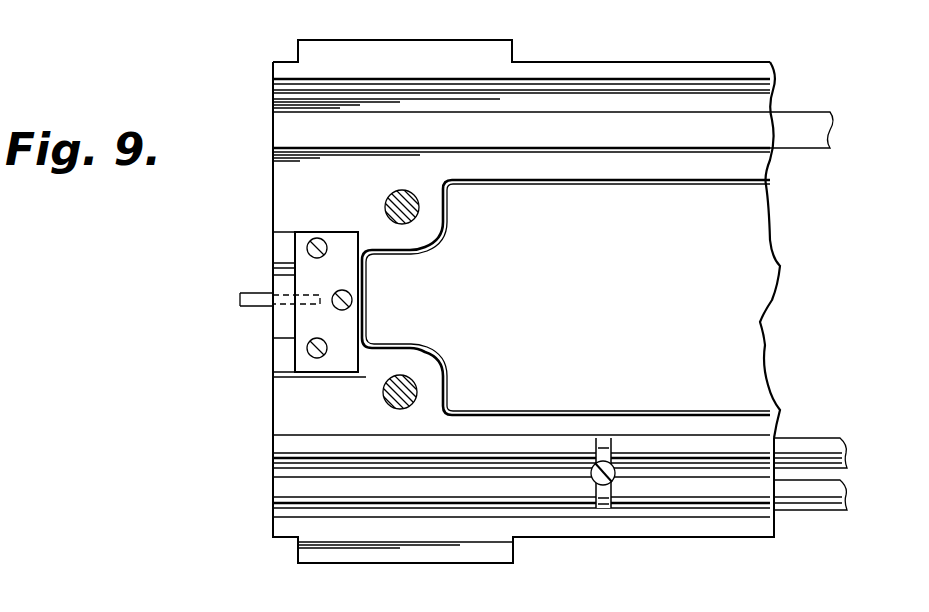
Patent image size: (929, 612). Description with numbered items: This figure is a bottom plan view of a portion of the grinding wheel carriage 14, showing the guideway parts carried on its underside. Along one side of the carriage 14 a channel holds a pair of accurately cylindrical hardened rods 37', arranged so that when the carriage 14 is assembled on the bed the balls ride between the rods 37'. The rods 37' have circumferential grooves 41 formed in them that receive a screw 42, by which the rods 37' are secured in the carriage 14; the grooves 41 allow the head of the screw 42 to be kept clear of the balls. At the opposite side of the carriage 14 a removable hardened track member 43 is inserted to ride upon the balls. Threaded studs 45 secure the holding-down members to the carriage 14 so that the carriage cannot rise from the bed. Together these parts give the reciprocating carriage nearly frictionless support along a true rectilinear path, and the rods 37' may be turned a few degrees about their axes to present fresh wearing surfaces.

The carriage 14 is at (760, 291).
The removable hardened track member 43 is at (625, 136).
The threaded studs 45 is at (386, 203).
The hardened rods 37' is at (841, 474).
The circumferential grooves 41 is at (601, 440).
The screw 42 is at (614, 480).